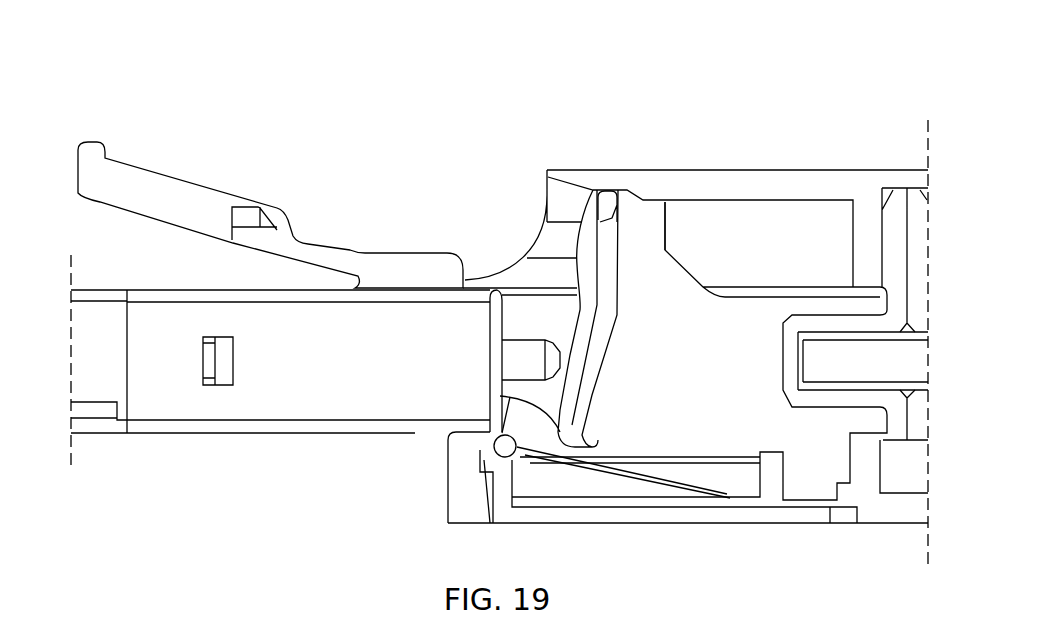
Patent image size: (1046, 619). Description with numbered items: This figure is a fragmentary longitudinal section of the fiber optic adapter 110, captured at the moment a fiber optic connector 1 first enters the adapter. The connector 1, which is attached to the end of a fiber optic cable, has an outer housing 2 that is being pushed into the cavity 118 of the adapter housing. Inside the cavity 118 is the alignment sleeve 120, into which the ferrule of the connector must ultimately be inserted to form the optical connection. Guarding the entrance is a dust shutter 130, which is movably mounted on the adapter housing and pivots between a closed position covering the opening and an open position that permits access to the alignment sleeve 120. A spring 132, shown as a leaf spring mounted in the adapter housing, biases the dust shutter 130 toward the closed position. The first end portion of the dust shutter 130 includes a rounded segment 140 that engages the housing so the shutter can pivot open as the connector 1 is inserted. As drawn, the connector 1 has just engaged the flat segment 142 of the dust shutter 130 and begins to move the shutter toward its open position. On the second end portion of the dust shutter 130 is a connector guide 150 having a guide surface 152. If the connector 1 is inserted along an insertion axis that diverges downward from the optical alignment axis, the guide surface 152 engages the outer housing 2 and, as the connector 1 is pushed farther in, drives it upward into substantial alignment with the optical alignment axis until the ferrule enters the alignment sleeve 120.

The fiber optic connector 1 is at (390, 245).
The outer housing 2 is at (310, 382).
The fiber optic adapter 110 is at (728, 108).
The cavity 118 is at (682, 382).
The alignment sleeve 120 is at (833, 323).
The dust shutter 130 is at (542, 462).
The spring 132 is at (653, 480).
The rounded segment 140 is at (495, 454).
The flat segment 142 is at (500, 433).
The connector guide 150 is at (566, 233).
The guide surface 152 is at (582, 233).